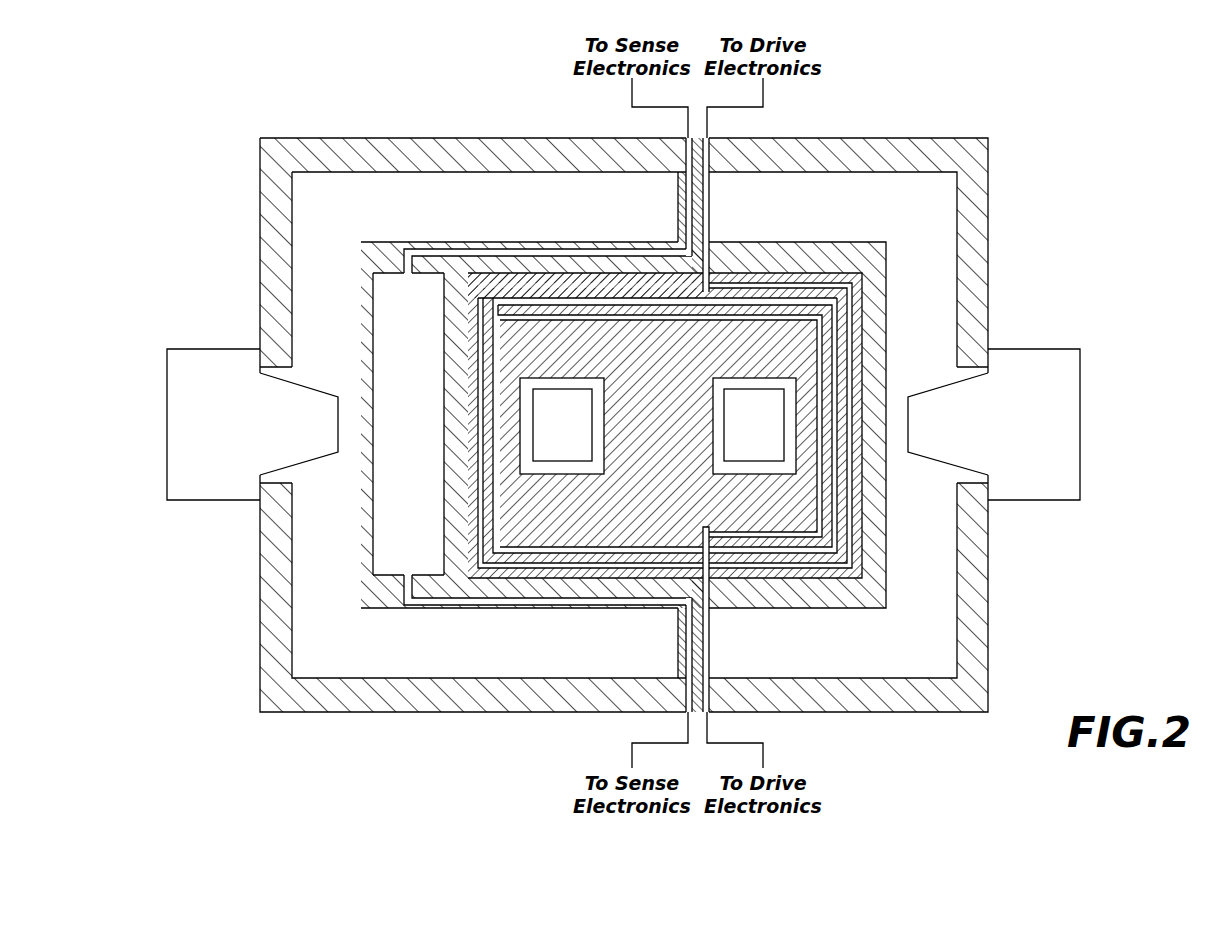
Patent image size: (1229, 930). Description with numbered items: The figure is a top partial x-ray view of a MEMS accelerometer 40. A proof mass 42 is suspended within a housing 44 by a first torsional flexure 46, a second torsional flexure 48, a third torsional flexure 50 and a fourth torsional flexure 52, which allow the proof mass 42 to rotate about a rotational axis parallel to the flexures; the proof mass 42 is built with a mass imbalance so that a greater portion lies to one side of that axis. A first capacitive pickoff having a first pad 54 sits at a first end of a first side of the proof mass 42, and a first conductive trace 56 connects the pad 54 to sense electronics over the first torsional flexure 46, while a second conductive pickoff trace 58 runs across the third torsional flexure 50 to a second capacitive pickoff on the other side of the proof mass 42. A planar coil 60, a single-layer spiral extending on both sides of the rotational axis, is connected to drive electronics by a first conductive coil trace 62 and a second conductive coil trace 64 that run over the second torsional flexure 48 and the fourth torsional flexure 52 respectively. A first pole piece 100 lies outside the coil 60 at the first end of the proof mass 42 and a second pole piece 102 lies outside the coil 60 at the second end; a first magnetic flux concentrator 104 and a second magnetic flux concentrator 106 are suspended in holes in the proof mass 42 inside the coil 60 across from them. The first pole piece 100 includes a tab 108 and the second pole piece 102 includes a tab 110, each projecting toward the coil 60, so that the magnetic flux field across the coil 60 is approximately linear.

The MEMS accelerometer 40 is at (1062, 117).
The proof mass 42 is at (865, 243).
The housing 44 is at (989, 244).
The first torsional flexure 46 is at (678, 192).
The second torsional flexure 48 is at (703, 185).
The third torsional flexure 50 is at (686, 648).
The fourth torsional flexure 52 is at (703, 662).
The first pad 54 is at (397, 330).
The first conductive trace 56 is at (452, 243).
The second conductive pickoff trace 58 is at (464, 600).
The planar coil 60 is at (866, 314).
The first conductive coil trace 62 is at (709, 629).
The second conductive coil trace 64 is at (709, 216).
The first pole piece 100 is at (226, 500).
The second pole piece 102 is at (1034, 501).
The first magnetic flux concentrator 104 is at (549, 432).
The second magnetic flux concentrator 106 is at (738, 432).
The tab 108 is at (304, 467).
The tab 110 is at (944, 466).